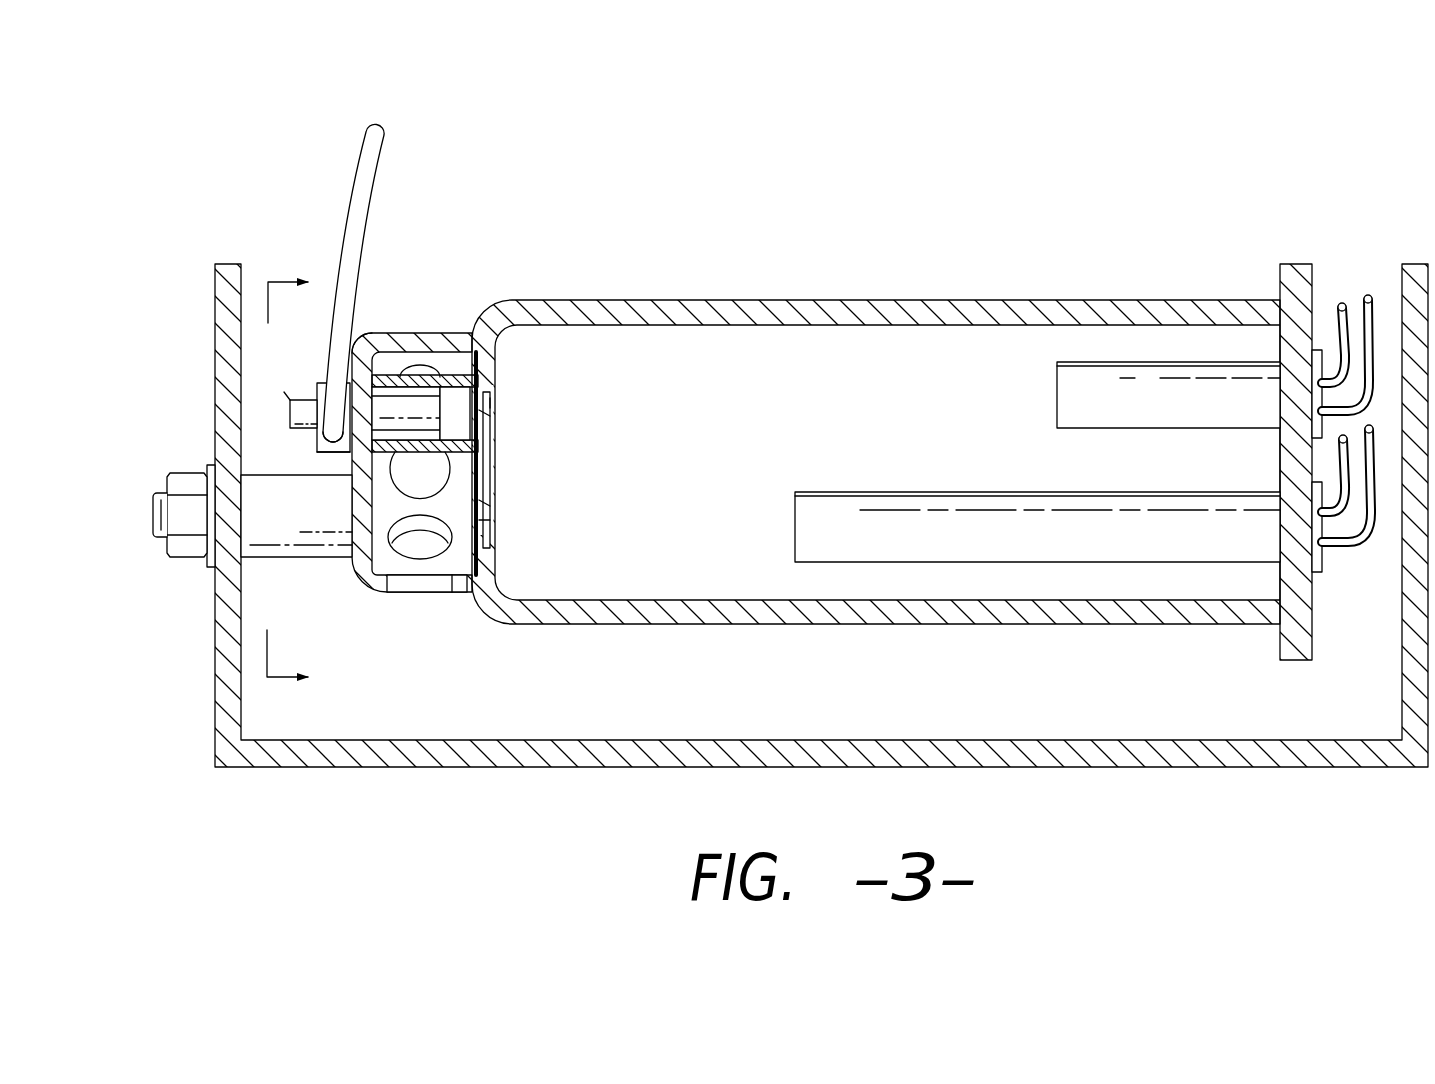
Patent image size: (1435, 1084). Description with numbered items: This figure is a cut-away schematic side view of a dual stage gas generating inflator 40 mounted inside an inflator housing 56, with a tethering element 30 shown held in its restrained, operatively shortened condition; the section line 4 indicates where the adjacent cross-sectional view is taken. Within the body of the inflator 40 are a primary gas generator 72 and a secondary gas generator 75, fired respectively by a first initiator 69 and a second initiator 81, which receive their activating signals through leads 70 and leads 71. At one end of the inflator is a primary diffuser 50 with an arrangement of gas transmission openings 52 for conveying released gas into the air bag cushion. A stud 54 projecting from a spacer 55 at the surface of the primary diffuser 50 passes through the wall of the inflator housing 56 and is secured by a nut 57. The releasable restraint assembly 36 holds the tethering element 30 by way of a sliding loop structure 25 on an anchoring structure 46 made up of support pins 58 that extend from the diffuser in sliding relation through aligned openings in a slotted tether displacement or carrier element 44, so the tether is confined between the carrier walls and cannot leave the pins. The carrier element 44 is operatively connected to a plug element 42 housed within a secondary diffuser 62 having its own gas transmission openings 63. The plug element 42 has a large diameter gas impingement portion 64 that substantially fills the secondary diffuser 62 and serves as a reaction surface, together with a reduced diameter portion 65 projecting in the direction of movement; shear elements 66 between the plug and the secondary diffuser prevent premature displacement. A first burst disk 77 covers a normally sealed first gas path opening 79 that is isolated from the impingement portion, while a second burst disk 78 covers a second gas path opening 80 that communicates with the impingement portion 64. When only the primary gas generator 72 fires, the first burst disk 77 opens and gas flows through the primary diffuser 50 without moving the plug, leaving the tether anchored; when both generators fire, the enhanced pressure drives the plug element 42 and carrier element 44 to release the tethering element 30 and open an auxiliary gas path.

The section line 4- 4 is at (292, 481).
The sliding loop structure 25 is at (333, 431).
The tethering element 30 is at (380, 152).
The releasable restraint assembly 36 is at (312, 382).
The gas generating inflator 40 is at (1091, 624).
The plug element 42 is at (385, 380).
The tether displacement element 44 is at (325, 452).
The anchoring structure 46 is at (284, 396).
The primary diffuser 50 is at (379, 594).
The gas transmission openings 52 is at (437, 587).
The stud 54 is at (150, 508).
The spacer 55 is at (282, 560).
The inflator housing 56 is at (1030, 767).
The nut 57 is at (188, 558).
The support pins 58 is at (290, 412).
The secondary diffuser 62 is at (493, 498).
The gas transmission openings 63 is at (392, 378).
The gas impingement portion 64 is at (495, 428).
The reduced diameter portion 65 is at (418, 403).
The shear elements 66 is at (457, 318).
The first initiator 69 is at (1322, 574).
The leads 70 is at (1350, 544).
The leads 71 is at (1372, 312).
The primary gas generator 72 is at (893, 563).
The secondary gas generator 75 is at (1090, 430).
The first burst disk 77 is at (493, 503).
The second burst disk 78 is at (495, 414).
The first gas path opening 79 is at (488, 518).
The second gas path opening 80 is at (495, 403).
The second initiator 81 is at (1332, 325).